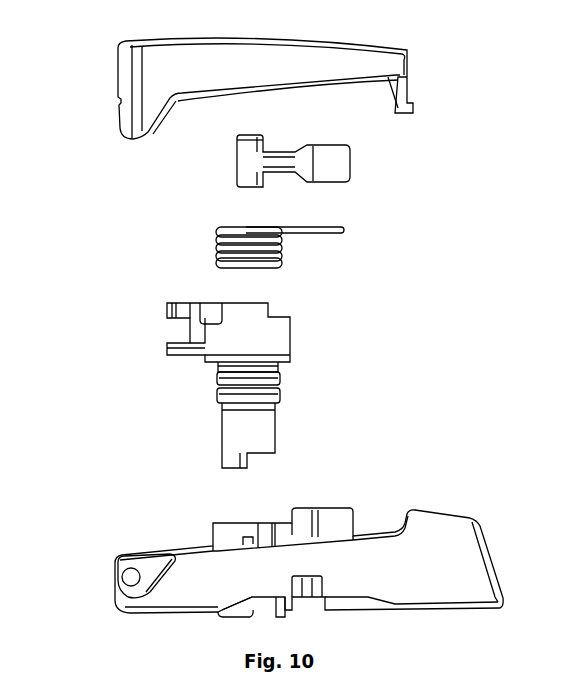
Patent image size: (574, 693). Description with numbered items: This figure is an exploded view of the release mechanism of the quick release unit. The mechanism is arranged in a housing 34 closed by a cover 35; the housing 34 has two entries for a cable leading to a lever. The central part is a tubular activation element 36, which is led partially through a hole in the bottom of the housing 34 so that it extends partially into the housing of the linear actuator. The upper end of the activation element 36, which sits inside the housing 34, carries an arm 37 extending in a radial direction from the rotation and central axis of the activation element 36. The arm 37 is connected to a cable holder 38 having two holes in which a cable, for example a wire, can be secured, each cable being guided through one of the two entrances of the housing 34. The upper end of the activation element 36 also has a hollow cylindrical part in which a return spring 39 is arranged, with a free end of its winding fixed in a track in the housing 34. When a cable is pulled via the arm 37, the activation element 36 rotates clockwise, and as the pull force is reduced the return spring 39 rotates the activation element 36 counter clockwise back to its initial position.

The housing 34 is at (418, 547).
The cover 35 is at (117, 73).
The tubular activation element 36 is at (310, 360).
The arm 37 is at (163, 342).
The cable holder 38 is at (236, 155).
The return spring 39 is at (217, 248).